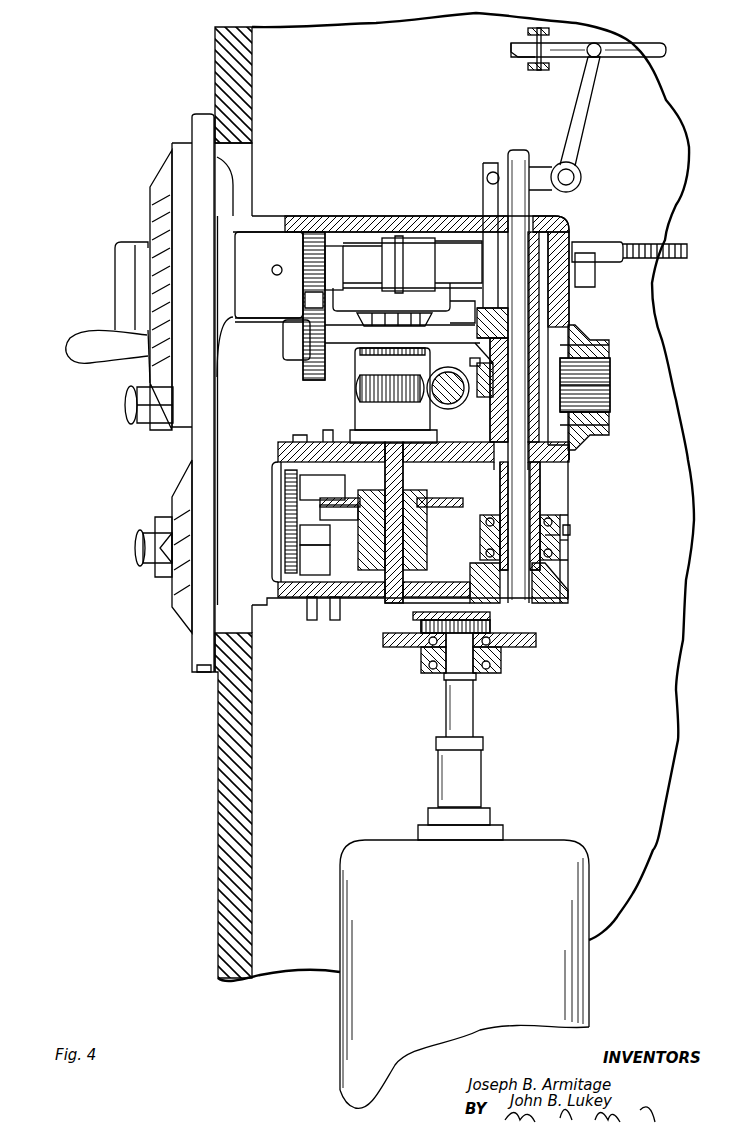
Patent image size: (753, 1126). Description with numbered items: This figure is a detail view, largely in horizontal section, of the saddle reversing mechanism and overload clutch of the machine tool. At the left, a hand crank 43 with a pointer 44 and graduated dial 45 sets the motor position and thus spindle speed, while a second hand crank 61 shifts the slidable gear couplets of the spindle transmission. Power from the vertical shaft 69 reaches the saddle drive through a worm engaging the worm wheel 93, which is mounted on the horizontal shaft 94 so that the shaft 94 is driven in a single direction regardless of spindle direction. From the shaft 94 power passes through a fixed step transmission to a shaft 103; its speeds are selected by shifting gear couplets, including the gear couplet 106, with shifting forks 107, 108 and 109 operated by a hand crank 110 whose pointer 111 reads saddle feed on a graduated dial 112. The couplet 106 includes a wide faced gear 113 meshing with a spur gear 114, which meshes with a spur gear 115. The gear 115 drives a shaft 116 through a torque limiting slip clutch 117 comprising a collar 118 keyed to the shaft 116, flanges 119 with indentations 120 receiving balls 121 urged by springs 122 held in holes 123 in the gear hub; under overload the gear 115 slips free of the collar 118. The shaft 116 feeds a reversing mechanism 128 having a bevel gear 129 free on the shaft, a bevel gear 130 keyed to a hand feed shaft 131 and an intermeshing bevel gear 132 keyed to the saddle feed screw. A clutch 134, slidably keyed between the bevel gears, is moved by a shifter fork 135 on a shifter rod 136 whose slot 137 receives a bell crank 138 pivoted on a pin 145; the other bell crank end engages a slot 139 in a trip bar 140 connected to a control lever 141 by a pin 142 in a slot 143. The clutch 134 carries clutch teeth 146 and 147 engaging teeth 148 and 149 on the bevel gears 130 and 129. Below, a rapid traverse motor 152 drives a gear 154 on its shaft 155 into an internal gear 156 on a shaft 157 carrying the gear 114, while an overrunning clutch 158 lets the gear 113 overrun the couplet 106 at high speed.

The hand crank 43 is at (78, 340).
The pointer 44 is at (147, 350).
The graduated dial 45 is at (150, 198).
The hand crank 61 is at (140, 403).
The vertical shaft 69 is at (470, 410).
The worm wheel 93 is at (355, 397).
The horizontal shaft 94 is at (345, 360).
The shaft 103 is at (392, 603).
The gear couplet 106 is at (339, 609).
The shifting fork 107 is at (320, 552).
The shifting fork 108 is at (335, 478).
The shifting fork 109 is at (286, 490).
The hand crank 110 is at (137, 545).
The pointer 111 is at (170, 545).
The graduated dial 112 is at (178, 620).
The wide faced gear 113 is at (315, 535).
The spur gear 114 is at (468, 520).
The spur gear 115 is at (572, 530).
The shaft 116 is at (512, 472).
The torque limiting slip clutch 117 is at (580, 560).
The collar 118 is at (560, 537).
The flanges 119 is at (553, 522).
The indentations 120 is at (486, 515).
The balls 121 is at (590, 518).
The springs 122 is at (560, 565).
The holes 123 is at (565, 548).
The reversing mechanism 128 is at (629, 264).
The bevel gear 129 is at (562, 445).
The bevel gear 130 is at (600, 290).
The hand feed shaft 131 is at (530, 207).
The bevel gear 132 is at (580, 340).
The clutch 134 is at (480, 392).
The shifter fork 135 is at (485, 345).
The shifter rod 136 is at (488, 200).
The slot 137 is at (488, 182).
The bell crank 138 is at (572, 135).
The slot 139 is at (598, 44).
The trip bar 140 is at (660, 45).
The control lever 141 is at (548, 30).
The pin 142 is at (527, 32).
The slot 143 is at (530, 58).
The pin 145 is at (582, 178).
The clutch teeth 146 is at (610, 362).
The clutch teeth 147 is at (608, 407).
The clutch teeth 148 is at (475, 362).
The clutch teeth 149 is at (608, 424).
The motor 152 is at (380, 895).
The gear 154 is at (492, 627).
The shaft 155 is at (455, 698).
The internal gear 156 is at (410, 648).
The shaft 157 is at (403, 615).
The overrunning clutch 158 is at (325, 512).